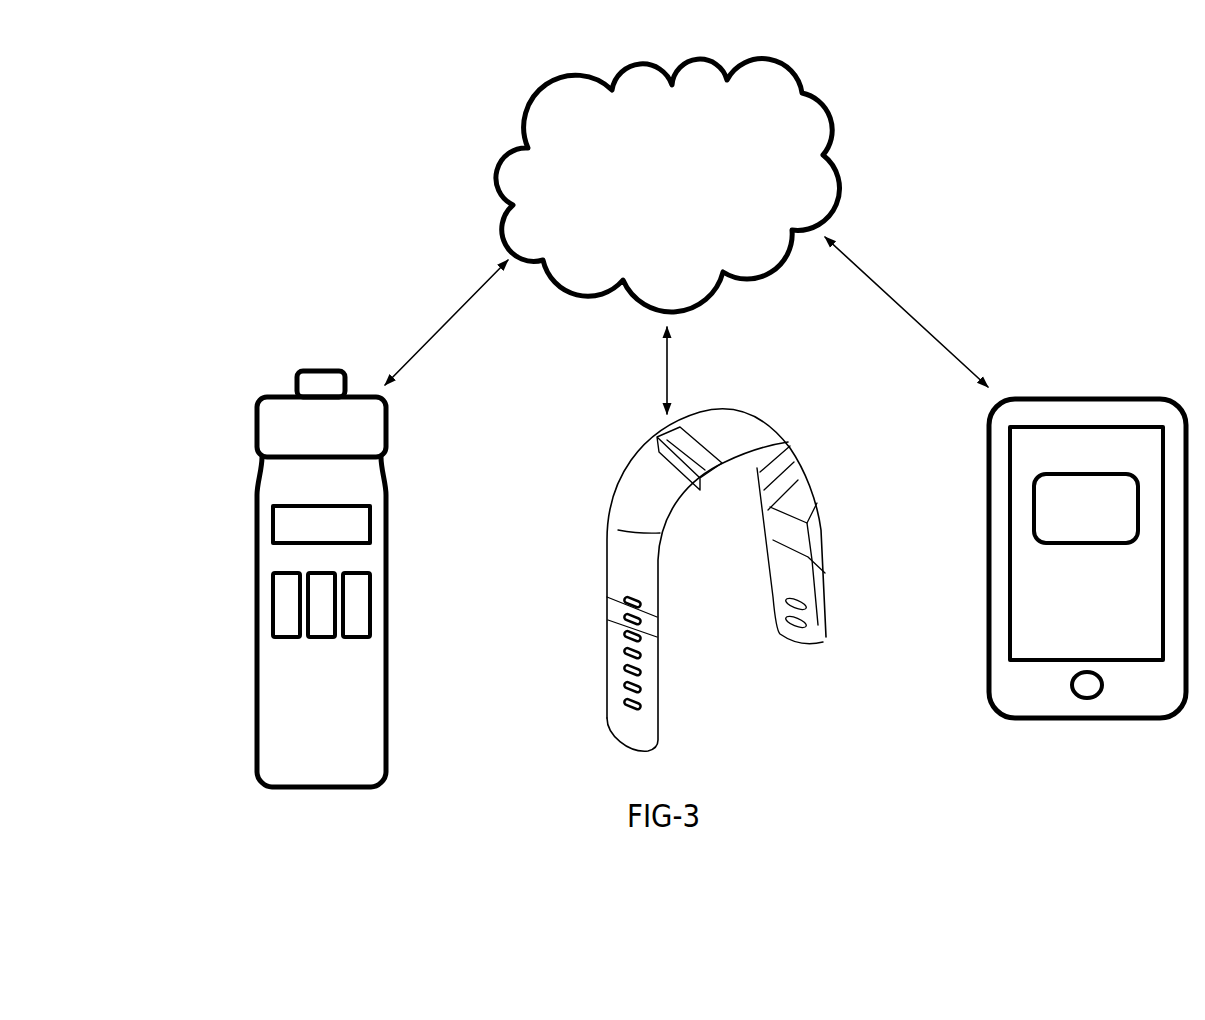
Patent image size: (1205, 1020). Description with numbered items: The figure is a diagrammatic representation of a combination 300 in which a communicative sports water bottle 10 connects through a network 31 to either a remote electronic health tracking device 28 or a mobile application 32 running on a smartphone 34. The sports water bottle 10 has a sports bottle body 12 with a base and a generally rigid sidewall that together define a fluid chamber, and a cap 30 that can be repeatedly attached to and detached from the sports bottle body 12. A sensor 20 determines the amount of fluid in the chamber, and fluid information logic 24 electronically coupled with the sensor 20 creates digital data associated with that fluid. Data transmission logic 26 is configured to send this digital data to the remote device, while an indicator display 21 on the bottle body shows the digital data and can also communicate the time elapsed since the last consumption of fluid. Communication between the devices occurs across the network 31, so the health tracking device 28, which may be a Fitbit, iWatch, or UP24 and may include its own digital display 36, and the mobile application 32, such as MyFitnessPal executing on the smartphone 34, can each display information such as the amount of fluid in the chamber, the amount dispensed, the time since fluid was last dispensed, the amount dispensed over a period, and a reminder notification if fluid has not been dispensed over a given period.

The sports water bottle 10 is at (258, 347).
The sports bottle body 12 is at (295, 718).
The sensor 20 is at (285, 610).
The indicator display 21 is at (297, 527).
The fluid information logic 24 is at (320, 626).
The data transmission logic 26 is at (357, 610).
The remote electronic health tracking device 28 is at (715, 673).
The cap 30 is at (285, 424).
The network 31 is at (530, 113).
The mobile application 32 is at (1055, 518).
The smartphone 34 is at (1085, 392).
The digital display 36 is at (697, 455).
The combination 300 is at (990, 133).